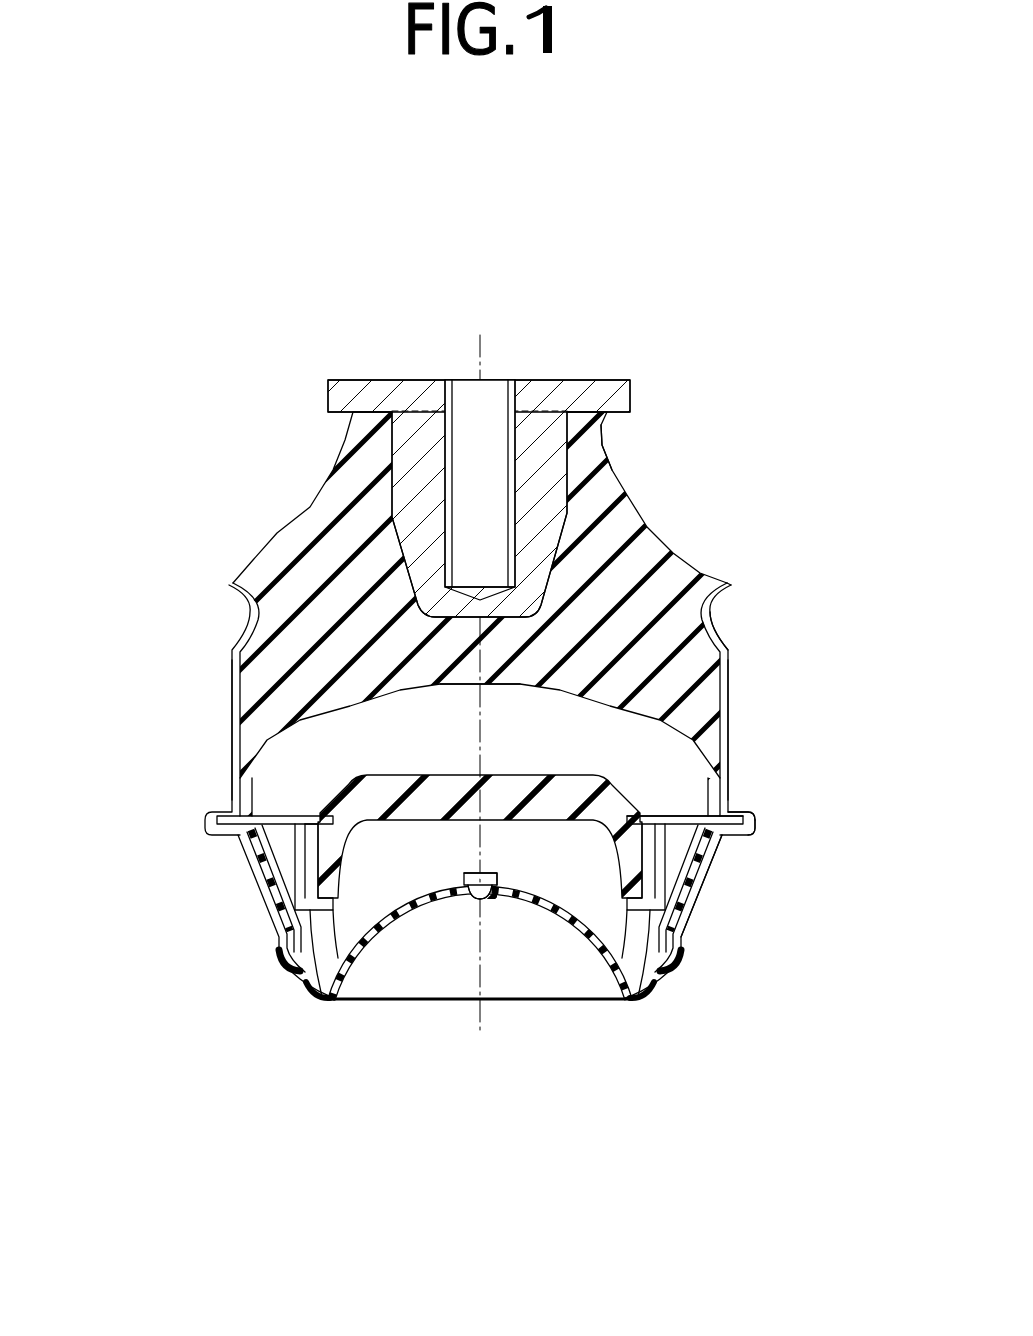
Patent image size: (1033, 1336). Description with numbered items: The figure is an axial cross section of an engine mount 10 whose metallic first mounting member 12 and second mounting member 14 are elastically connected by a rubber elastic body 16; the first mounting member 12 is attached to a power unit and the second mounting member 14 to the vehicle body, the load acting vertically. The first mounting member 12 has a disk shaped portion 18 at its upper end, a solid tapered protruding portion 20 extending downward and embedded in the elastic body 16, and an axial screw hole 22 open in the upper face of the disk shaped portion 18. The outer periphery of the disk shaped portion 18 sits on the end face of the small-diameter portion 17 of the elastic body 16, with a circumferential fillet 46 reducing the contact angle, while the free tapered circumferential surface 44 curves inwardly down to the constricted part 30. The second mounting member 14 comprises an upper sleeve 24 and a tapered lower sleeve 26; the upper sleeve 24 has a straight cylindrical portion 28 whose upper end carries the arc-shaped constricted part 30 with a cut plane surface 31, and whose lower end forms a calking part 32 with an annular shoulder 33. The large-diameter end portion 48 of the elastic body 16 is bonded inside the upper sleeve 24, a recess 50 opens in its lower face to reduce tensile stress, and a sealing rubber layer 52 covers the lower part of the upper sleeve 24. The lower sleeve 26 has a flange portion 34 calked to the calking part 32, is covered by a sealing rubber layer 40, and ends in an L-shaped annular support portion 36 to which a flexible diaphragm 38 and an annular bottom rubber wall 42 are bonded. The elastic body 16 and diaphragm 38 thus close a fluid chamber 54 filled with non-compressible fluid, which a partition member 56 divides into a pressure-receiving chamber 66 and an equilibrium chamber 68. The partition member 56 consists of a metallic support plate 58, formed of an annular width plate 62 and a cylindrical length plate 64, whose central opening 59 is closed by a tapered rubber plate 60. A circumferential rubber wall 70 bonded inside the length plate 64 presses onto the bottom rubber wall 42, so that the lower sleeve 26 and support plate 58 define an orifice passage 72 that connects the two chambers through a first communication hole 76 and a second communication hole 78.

The engine mount 10 is at (530, 324).
The first mounting member 12 is at (618, 368).
The second mounting member 14 is at (82, 760).
The elastic body 16 is at (337, 540).
The small-diameter portion 17 is at (577, 425).
The disk shaped portion 18 is at (373, 385).
The protruding portion 20 is at (555, 515).
The screw hole 22 is at (492, 412).
The upper sleeve 24 is at (232, 740).
The lower sleeve 26 is at (243, 888).
The cylindrical portion 28 is at (730, 710).
The constricted part 30 is at (703, 618).
The plane surface 31 is at (730, 582).
The calking part 32 is at (747, 820).
The annular shoulder 33 is at (743, 803).
The flange portion 34 is at (220, 819).
The annular support portion 36 is at (683, 943).
The flexible diaphragm 38 is at (420, 972).
The sealing rubber layer 40 is at (710, 880).
The annular bottom rubber wall 42 is at (607, 987).
The tapered circumferential surface 44 is at (603, 450).
The circumferential fillet 46 is at (363, 417).
The large-diameter end portion 48 is at (247, 693).
The recess 50 is at (507, 693).
The sealing rubber layer 52 is at (715, 788).
The fluid chamber 54 is at (572, 1128).
The partition member 56 is at (448, 770).
The metallic support plate 58 is at (277, 813).
The central opening 59 is at (625, 838).
The rubber plate 60 is at (517, 790).
The width plate 62 is at (307, 823).
The length plate 64 is at (323, 853).
The pressure-receiving chamber 66 is at (460, 757).
The equilibrium chamber 68 is at (563, 880).
The circumferential rubber wall 70 is at (717, 868).
The orifice passage 72 is at (675, 890).
The first communication hole 76 is at (685, 812).
The second communication hole 78 is at (357, 960).